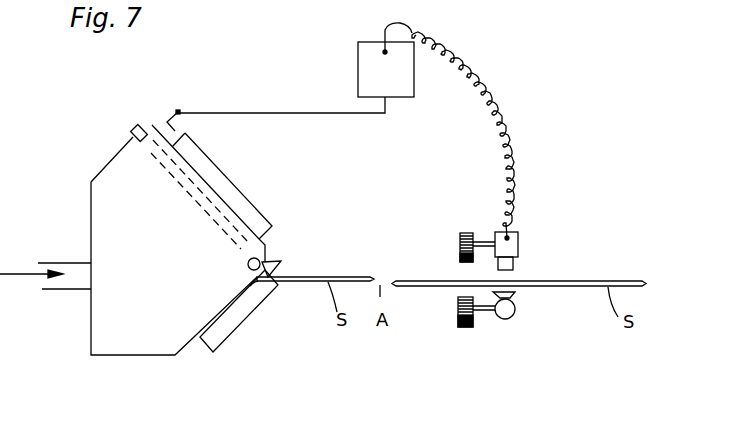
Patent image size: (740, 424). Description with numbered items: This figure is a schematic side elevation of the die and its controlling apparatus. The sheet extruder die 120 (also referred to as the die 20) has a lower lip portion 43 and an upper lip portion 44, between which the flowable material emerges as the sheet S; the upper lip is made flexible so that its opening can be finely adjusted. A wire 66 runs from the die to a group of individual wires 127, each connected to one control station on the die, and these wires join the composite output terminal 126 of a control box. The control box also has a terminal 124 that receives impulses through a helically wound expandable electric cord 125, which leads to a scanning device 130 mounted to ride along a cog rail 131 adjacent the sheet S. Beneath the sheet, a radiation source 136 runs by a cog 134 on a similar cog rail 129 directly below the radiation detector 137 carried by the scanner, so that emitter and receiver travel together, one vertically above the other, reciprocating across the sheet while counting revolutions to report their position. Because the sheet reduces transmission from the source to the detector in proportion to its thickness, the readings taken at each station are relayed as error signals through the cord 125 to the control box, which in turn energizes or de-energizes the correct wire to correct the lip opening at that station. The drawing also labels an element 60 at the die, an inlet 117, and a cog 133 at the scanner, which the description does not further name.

The die 20 is at (226, 168).
The lower lip portion 43 is at (253, 305).
The upper lip portion 44 is at (279, 267).
The internal passage 60 is at (150, 150).
The wire 66 is at (176, 110).
The inlet conduit 117 is at (67, 290).
The sheet extruder die 120 is at (145, 343).
The terminal 124 is at (383, 52).
The helically wound expandable electric cord 125 is at (480, 84).
The composite output terminal 126 is at (385, 99).
The individual wires 127 is at (233, 112).
The cog rail 129 is at (463, 328).
The scanning device 130 is at (518, 240).
The cog rail 131 is at (460, 256).
The upper knurled roller 133 is at (466, 233).
The cog 134 is at (458, 303).
The radiation source 136 is at (515, 313).
The radiation detector 137 is at (513, 266).